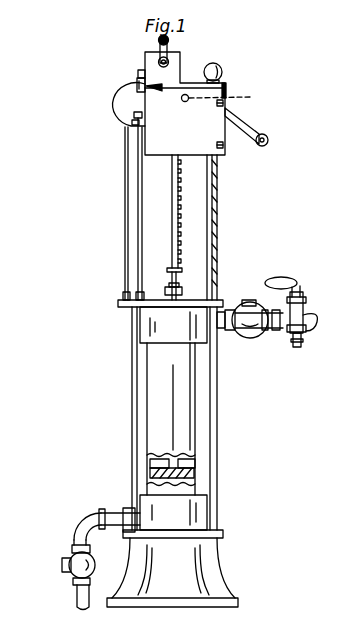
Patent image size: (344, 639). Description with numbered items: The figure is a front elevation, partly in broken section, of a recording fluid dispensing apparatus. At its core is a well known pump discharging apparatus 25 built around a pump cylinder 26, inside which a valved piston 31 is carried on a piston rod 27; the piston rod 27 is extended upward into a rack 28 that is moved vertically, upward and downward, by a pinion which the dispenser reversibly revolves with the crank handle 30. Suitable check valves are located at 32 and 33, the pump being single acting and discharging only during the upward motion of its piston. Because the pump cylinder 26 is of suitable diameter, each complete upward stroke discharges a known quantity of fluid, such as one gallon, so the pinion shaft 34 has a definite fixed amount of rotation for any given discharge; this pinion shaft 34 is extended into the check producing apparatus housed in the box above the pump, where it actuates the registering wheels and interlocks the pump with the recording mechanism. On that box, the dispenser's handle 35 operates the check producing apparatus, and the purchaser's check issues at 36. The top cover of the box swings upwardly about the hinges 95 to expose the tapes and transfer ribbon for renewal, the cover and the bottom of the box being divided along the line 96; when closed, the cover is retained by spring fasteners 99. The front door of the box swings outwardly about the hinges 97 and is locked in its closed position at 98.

The pump discharging apparatus 25 is at (155, 367).
The pump cylinder 26 is at (203, 398).
The piston rod 27 is at (178, 278).
The rack 28 is at (182, 223).
The crank handle 30 is at (268, 141).
The valved piston 31 is at (200, 472).
The check valve 32 is at (75, 553).
The check valve 33 is at (243, 303).
The pinion shaft 34 is at (228, 97).
The dispenser's handle 35 is at (168, 40).
The check issuing point 36 is at (136, 79).
The hinges 95 is at (226, 89).
The dividing line 96 is at (162, 85).
The hinges 97 is at (223, 105).
The lock 98 is at (118, 123).
The spring fasteners 99 is at (141, 72).